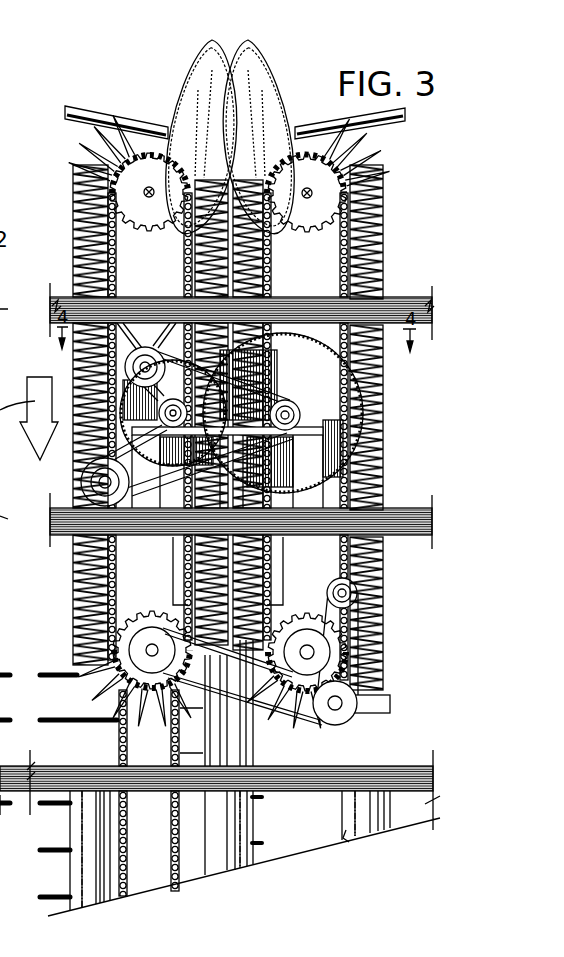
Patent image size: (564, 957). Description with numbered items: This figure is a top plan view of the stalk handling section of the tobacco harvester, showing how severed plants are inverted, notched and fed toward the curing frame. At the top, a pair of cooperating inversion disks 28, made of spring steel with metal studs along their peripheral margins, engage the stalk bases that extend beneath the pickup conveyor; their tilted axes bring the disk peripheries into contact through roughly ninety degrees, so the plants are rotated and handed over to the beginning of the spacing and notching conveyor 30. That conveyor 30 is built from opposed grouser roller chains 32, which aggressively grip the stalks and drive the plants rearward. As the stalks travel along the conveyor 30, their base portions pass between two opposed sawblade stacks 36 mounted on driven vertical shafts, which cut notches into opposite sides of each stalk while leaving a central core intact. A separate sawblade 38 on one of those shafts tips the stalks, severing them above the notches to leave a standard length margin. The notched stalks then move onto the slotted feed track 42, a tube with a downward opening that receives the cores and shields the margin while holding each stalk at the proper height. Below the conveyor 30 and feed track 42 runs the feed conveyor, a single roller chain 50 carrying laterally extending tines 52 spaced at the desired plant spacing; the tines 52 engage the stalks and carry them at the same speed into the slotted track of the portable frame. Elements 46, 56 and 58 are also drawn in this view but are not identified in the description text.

The inversion disks 28 is at (177, 84).
The spacing and notching conveyor 30 is at (83, 86).
The grouser roller chains 32 is at (78, 254).
The sawblade stacks 36 is at (200, 391).
The sawblade 38 is at (331, 390).
The feed track 42 is at (250, 743).
The cross bar 46 is at (340, 782).
The roller chain 50 is at (168, 737).
The tines 52 is at (73, 680).
The support posts 56 is at (77, 828).
The peg 58 is at (55, 740).